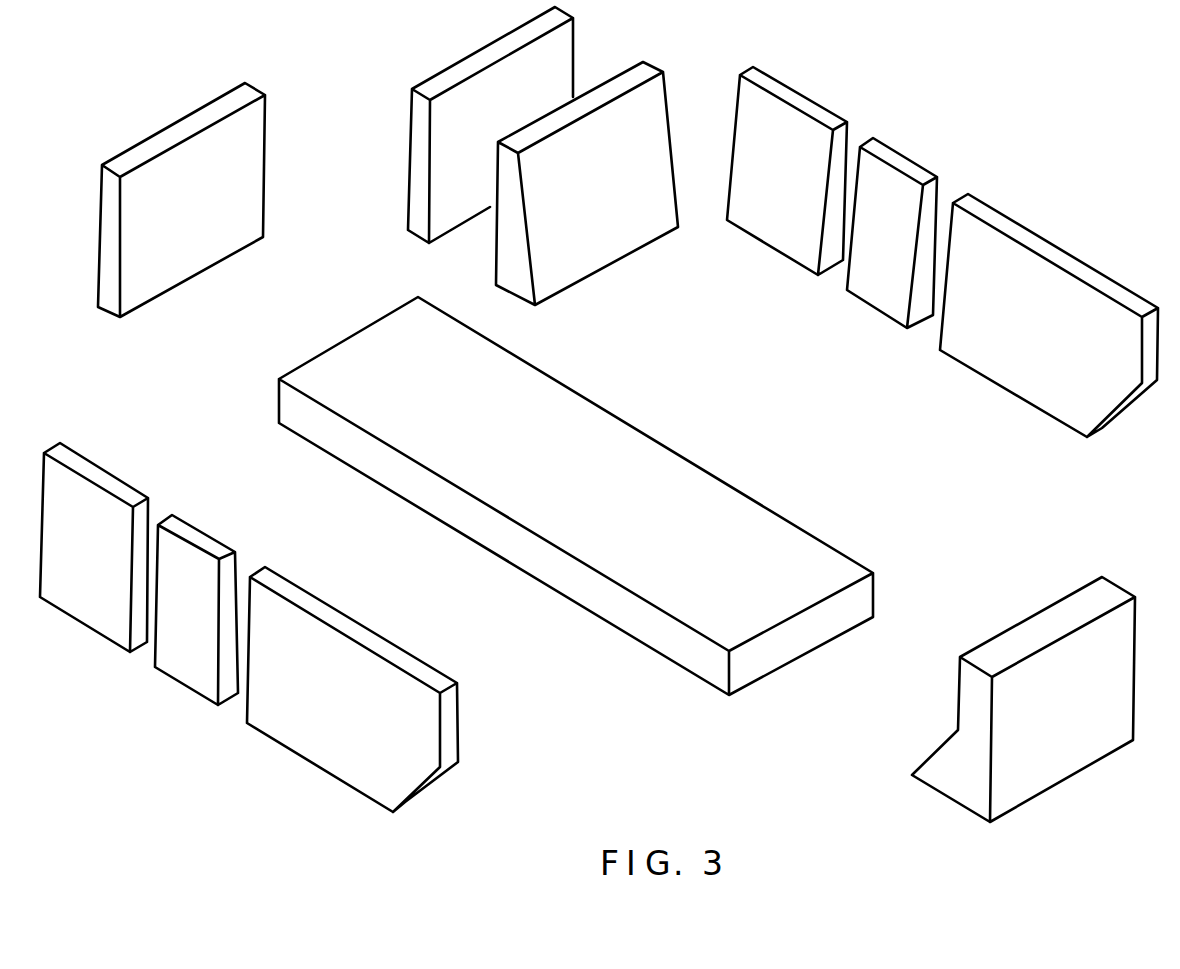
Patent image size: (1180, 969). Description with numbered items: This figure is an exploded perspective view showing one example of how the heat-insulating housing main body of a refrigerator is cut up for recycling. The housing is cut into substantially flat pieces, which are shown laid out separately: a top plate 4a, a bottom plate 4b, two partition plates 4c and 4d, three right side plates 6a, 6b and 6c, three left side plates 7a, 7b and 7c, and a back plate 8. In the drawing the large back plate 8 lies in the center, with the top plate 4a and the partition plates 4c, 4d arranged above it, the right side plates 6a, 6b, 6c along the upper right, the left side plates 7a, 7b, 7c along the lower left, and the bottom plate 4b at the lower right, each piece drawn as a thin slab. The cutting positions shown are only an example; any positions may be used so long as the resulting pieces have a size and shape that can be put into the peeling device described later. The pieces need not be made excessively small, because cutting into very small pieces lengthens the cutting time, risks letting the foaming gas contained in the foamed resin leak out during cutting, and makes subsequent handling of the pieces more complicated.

The top plate 4a is at (170, 132).
The bottom plate 4b is at (1100, 592).
The partition plate 4c is at (453, 72).
The partition plate 4d is at (638, 72).
The right side plate 6a is at (795, 100).
The right side plate 6b is at (903, 165).
The right side plate 6c is at (1067, 263).
The left side plate 7a is at (88, 608).
The left side plate 7b is at (180, 667).
The left side plate 7c is at (292, 730).
The back plate 8 is at (724, 508).